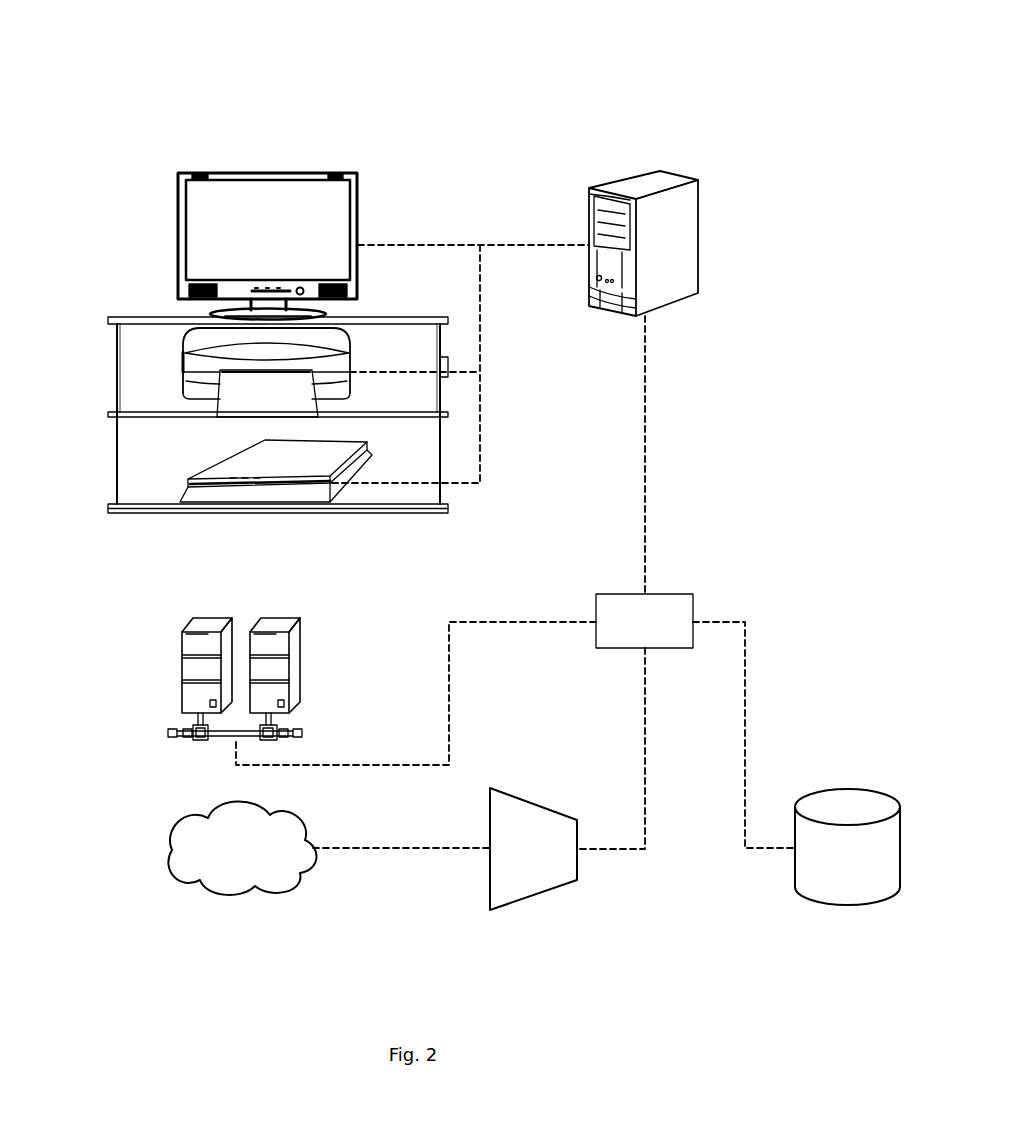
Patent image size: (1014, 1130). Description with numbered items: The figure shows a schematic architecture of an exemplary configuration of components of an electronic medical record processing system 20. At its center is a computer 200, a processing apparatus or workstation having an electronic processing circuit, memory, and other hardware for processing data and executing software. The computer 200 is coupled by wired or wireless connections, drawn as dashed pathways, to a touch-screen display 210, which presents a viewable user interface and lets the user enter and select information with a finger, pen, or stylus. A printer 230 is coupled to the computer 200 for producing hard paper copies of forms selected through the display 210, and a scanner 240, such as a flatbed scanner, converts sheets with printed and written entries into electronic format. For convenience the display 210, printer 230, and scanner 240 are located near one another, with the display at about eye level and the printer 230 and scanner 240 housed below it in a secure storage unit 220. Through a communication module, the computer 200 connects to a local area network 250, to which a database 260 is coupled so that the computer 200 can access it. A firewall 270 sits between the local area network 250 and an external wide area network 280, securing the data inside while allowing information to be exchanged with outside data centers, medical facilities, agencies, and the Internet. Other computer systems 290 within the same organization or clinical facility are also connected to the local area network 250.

The electronic medical record processing system 20 is at (214, 64).
The computer 200 is at (698, 217).
The touch-screen display 210 is at (357, 197).
The secure storage unit 220 is at (146, 320).
The printer 230 is at (185, 369).
The scanner 240 is at (197, 481).
The local area network 250 is at (663, 594).
The database 260 is at (865, 787).
The firewall 270 is at (545, 806).
The wide area network 280 is at (185, 830).
The other computer systems 290 is at (184, 626).